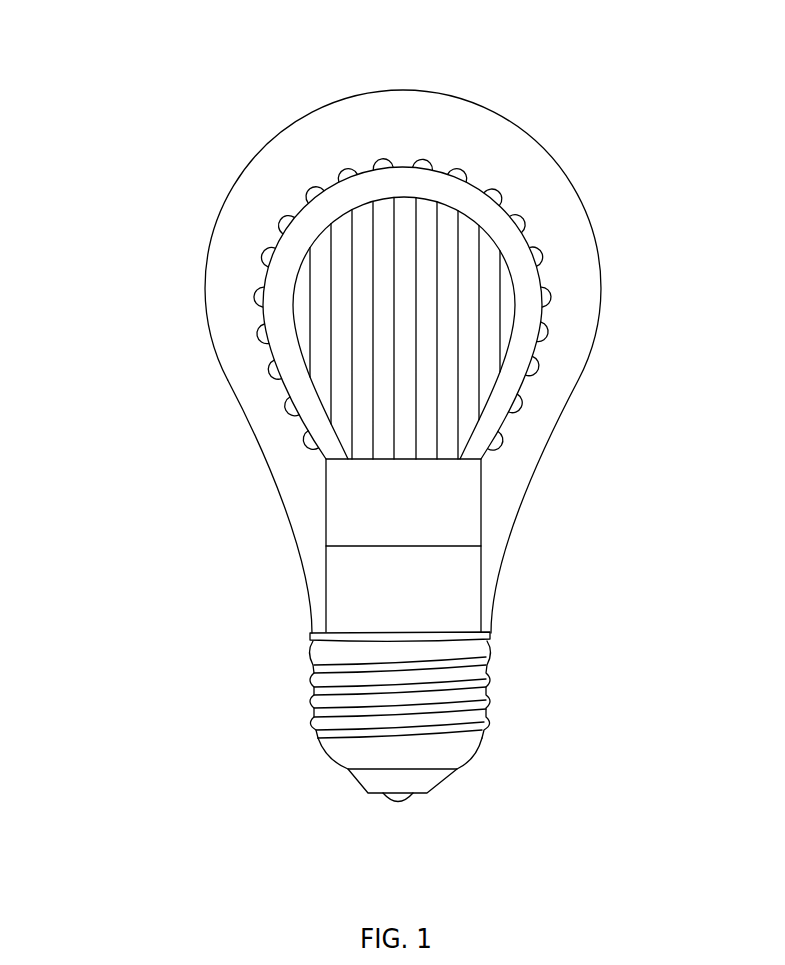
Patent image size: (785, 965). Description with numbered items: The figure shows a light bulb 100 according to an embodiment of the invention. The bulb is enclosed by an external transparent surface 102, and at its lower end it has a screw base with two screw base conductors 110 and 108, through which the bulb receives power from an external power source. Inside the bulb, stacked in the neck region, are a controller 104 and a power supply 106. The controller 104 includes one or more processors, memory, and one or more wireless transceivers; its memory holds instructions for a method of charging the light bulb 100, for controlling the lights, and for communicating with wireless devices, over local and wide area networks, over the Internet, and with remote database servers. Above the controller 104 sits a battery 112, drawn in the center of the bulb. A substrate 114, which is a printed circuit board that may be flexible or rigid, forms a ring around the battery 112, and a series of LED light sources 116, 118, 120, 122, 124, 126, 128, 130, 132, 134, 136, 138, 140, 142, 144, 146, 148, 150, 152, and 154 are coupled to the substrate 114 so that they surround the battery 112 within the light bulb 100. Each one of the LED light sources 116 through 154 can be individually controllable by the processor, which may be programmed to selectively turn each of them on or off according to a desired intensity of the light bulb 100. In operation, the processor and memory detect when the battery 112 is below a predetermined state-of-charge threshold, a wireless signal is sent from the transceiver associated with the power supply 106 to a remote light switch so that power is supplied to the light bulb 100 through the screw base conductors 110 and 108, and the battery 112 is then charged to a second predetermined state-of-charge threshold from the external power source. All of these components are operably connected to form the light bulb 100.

The light bulb 100 is at (106, 53).
The external transparent surface 102 is at (593, 230).
The controller 104 is at (337, 534).
The power supply 106 is at (465, 590).
The screw base conductor 108 is at (403, 801).
The screw base conductor 110 is at (473, 723).
The battery 112 is at (446, 393).
The substrate 114 is at (533, 307).
The LED light source 116 is at (305, 447).
The LED light source 118 is at (286, 412).
The LED light source 120 is at (268, 377).
The LED light source 122 is at (256, 337).
The LED light source 124 is at (253, 297).
The LED light source 126 is at (262, 255).
The LED light source 128 is at (280, 220).
The LED light source 130 is at (309, 189).
The LED light source 132 is at (343, 167).
The LED light source 134 is at (381, 157).
The LED light source 136 is at (426, 158).
The LED light source 138 is at (463, 168).
The LED light source 140 is at (500, 193).
The LED light source 142 is at (527, 221).
The LED light source 144 is at (545, 256).
The LED light source 146 is at (553, 300).
The LED light source 148 is at (550, 337).
The LED light source 150 is at (540, 371).
The LED light source 152 is at (521, 410).
The LED light source 154 is at (501, 448).